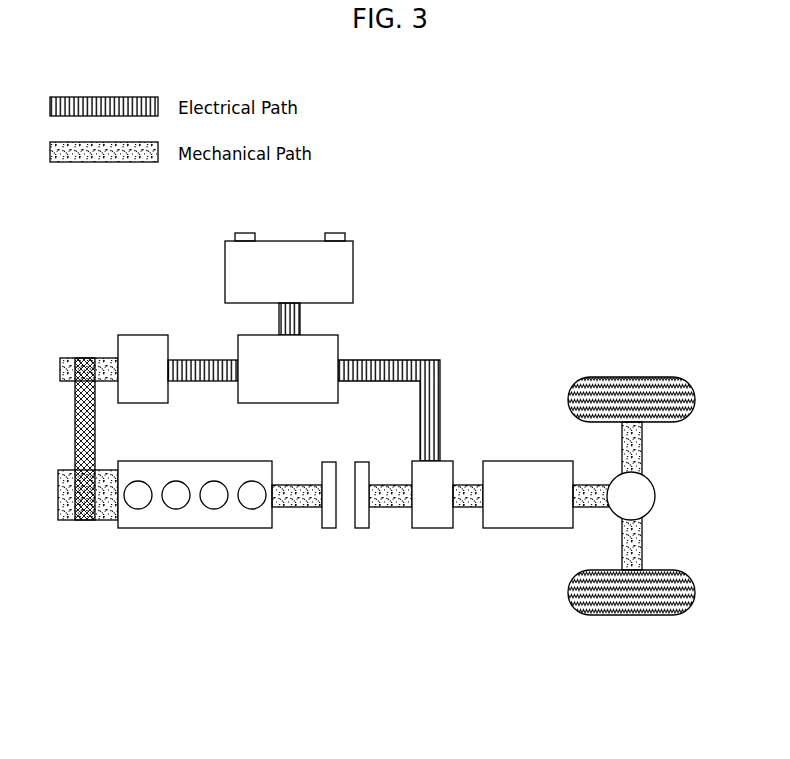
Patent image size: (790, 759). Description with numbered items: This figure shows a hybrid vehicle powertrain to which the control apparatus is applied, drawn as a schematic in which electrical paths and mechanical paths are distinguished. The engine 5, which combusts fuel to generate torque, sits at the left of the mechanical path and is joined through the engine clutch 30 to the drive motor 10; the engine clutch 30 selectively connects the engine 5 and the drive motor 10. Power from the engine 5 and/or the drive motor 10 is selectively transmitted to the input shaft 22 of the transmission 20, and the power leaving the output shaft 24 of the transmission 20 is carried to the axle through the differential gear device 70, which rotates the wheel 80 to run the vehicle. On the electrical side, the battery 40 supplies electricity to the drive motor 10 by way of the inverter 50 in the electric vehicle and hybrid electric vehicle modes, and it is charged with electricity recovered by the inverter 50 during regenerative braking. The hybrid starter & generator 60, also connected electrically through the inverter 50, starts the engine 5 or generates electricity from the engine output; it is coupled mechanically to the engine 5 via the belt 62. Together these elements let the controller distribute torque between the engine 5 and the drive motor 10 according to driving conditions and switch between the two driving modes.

The engine 5 is at (193, 528).
The drive motor 10 is at (430, 528).
The transmission 20 is at (527, 461).
The input shaft 22 is at (465, 485).
The output shaft 24 is at (591, 485).
The engine clutch 30 is at (343, 550).
The battery 40 is at (355, 271).
The inverter 50 is at (338, 346).
The hybrid starter & generator (HSG) 60 is at (141, 335).
The belt 62 is at (75, 395).
The differential gear device 70 is at (655, 496).
The wheel 80 is at (631, 377).